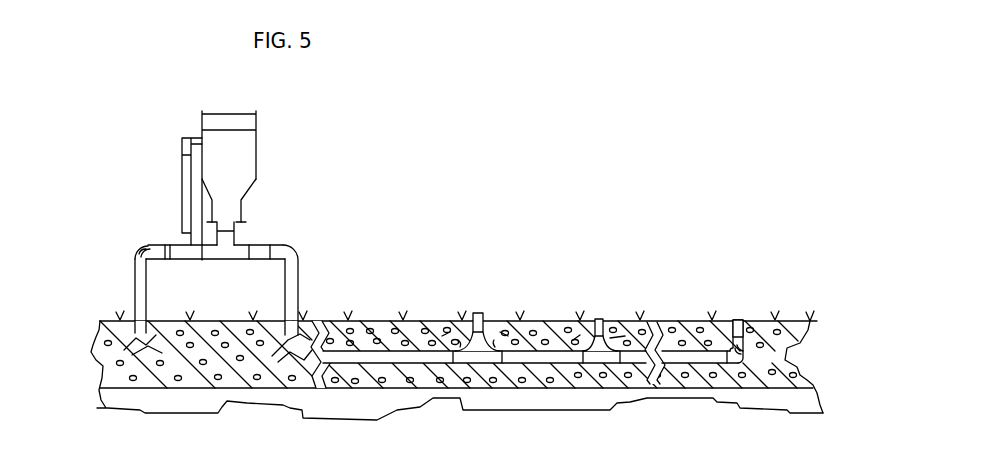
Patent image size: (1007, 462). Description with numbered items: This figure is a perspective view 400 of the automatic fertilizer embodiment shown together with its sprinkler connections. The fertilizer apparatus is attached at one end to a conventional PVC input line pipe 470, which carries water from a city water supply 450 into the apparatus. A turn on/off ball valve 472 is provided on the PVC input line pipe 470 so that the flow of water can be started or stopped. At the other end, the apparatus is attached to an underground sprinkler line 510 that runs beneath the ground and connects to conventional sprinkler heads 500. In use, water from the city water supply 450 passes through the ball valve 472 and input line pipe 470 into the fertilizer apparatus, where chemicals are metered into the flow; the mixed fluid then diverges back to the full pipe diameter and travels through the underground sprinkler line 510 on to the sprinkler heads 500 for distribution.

The perspective view 400 is at (122, 118).
The city water supply 450 is at (90, 348).
The PVC input line pipe 470 is at (135, 268).
The turn on/off ball valve 472 is at (152, 244).
The sprinkler heads 500 is at (482, 308).
The underground sprinkler line 510 is at (353, 356).